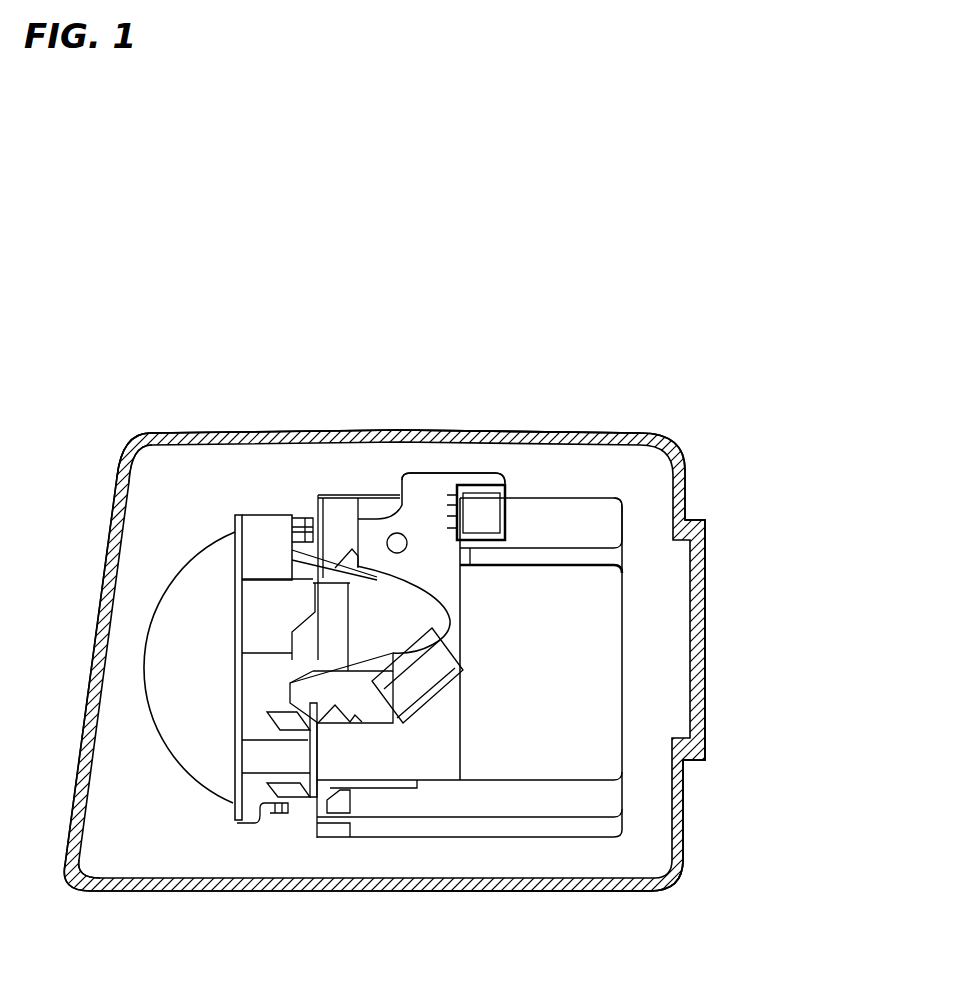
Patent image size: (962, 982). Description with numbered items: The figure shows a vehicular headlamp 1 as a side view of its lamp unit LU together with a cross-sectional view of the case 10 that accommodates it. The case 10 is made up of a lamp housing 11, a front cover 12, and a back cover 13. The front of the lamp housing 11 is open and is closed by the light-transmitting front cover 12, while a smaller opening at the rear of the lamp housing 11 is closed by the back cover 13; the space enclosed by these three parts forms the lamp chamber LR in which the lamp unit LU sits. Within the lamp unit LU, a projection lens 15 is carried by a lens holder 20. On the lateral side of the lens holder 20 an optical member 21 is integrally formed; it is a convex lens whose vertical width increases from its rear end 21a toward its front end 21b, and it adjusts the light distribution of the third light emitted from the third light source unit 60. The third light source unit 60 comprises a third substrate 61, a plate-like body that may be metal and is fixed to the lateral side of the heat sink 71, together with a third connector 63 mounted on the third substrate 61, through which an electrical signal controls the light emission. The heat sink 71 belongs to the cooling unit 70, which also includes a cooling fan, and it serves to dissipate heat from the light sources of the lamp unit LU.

The vehicular headlamp 1 is at (157, 395).
The case 10 is at (723, 240).
The lamp housing 11 is at (462, 437).
The front cover 12 is at (205, 433).
The back cover 13 is at (705, 562).
The projection lens 15 is at (190, 625).
The lens holder 20 is at (248, 803).
The optical member 21 is at (268, 715).
The rear end 21a is at (447, 692).
The front end 21b is at (300, 632).
The third light source unit 60 is at (392, 470).
The third substrate 61 is at (426, 507).
The third connector 63 is at (478, 513).
The cooling unit 70 is at (603, 853).
The heat sink 71 is at (558, 525).
The lamp unit LU is at (228, 493).
The lamp chamber LR is at (115, 837).